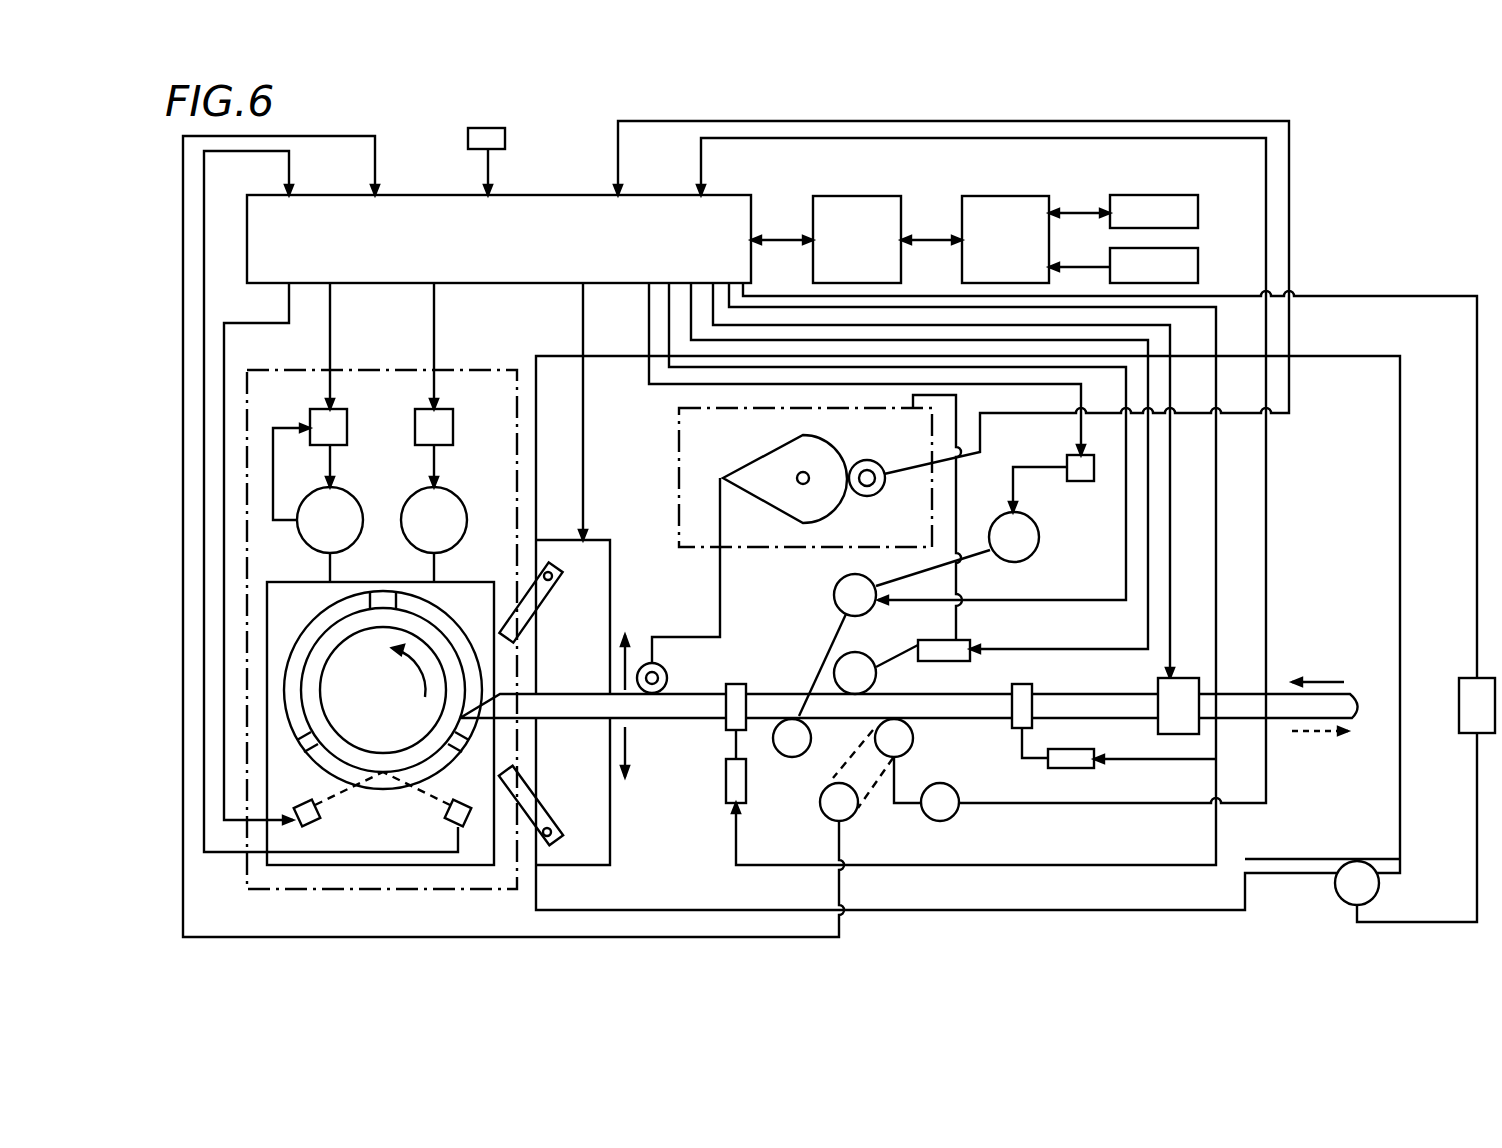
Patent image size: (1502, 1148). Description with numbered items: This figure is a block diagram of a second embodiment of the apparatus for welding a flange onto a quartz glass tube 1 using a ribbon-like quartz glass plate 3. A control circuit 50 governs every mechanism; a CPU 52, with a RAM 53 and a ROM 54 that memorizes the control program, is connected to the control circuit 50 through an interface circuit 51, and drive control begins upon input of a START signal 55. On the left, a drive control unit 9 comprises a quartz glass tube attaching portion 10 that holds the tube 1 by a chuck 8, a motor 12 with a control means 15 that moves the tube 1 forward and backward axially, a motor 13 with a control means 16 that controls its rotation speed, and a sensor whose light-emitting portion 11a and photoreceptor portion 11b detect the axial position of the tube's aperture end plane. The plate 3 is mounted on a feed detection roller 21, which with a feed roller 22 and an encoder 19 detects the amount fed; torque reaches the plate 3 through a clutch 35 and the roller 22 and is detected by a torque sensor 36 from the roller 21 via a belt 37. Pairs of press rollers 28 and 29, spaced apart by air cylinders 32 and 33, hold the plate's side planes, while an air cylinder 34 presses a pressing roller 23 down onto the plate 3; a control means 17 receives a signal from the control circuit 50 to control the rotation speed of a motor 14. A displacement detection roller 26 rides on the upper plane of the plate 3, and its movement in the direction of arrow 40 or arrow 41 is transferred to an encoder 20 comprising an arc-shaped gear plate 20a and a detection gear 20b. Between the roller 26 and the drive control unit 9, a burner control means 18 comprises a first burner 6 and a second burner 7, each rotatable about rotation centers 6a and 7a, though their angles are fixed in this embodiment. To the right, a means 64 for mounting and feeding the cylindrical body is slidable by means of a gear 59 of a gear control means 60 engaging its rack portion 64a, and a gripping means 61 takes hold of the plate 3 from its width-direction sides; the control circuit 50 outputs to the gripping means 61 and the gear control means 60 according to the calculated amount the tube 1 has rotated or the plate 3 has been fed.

The quartz glass tube 1 is at (445, 760).
The quartz glass plate 3 is at (653, 712).
The first burner 6 is at (543, 600).
The rotation center 6a is at (550, 571).
The second burner 7 is at (538, 815).
The rotation center 7a is at (556, 843).
The chuck 8 is at (320, 632).
The drive control unit 9 is at (485, 370).
The quartz glass tube attaching portion 10 is at (470, 582).
The light-emitting portion 11a is at (322, 828).
The photoreceptor portion 11b is at (447, 825).
The motor 12 is at (462, 506).
The motor 13 is at (357, 506).
The motor 14 is at (1040, 539).
The control means 15 is at (453, 428).
The control means 16 is at (347, 426).
The control means 17 is at (1067, 460).
The burner control means 18 is at (600, 540).
The encoder 19 is at (950, 812).
The encoder 20 is at (696, 448).
The arc-shaped gear plate 20a is at (775, 488).
The detection gear 20b is at (858, 431).
The feed detection roller 21 is at (901, 736).
The feed roller 22 is at (792, 757).
The pressing roller 23 is at (860, 652).
The displacement detection roller 26 is at (647, 663).
The press rollers 28 is at (736, 684).
The press rollers 29 is at (1030, 684).
The air cylinder 32 is at (727, 779).
The air cylinder 33 is at (1075, 749).
The air cylinder 34 is at (972, 638).
The clutch 35 is at (834, 588).
The torque sensor 36 is at (832, 818).
The belt 37 is at (873, 793).
The arrow 40 is at (620, 676).
The arrow 41 is at (620, 742).
The control circuit 50 is at (608, 256).
The interface circuit 51 is at (850, 196).
The CPU 52 is at (1000, 196).
The RAM 53 is at (1198, 213).
The ROM 54 is at (1198, 266).
The START signal 55 is at (505, 139).
The gear 59 is at (1342, 890).
The gear control means 60 is at (1463, 677).
The gripping means 61 is at (1184, 678).
The means for mounting and feeding the cylindrical body 64 is at (1373, 356).
The rack portion 64a is at (1298, 859).